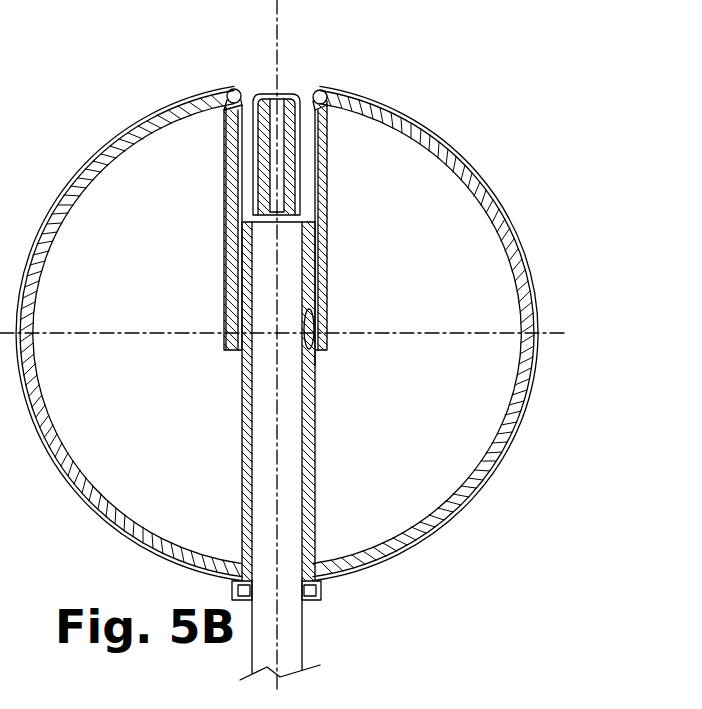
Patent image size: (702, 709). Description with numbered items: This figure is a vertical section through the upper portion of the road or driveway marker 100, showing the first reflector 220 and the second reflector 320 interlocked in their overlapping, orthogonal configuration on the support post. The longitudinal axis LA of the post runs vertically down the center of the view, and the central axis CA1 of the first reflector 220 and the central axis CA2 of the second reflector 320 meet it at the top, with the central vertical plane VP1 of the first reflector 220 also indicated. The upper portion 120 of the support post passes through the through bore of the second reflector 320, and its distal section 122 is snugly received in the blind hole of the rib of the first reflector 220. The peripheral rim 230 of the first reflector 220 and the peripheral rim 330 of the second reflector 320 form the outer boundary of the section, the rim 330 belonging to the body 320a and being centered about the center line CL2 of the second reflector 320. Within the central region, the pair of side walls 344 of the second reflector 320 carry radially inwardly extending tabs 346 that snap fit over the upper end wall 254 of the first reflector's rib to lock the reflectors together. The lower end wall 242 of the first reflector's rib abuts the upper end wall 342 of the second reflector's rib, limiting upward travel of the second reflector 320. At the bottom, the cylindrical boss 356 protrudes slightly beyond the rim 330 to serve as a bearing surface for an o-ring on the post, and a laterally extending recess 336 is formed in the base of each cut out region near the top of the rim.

The road or driveway marker 100 is at (505, 137).
The upper portion of the support post 120 is at (277, 625).
The distal section of the upper portion 122 is at (278, 262).
The first reflector 220 is at (302, 97).
The peripheral rim 230 is at (281, 91).
The end wall 242 is at (315, 367).
The upper end wall 254 is at (229, 214).
The second reflector 320 is at (470, 270).
The body 320a is at (482, 310).
The peripheral rim 330 is at (533, 277).
The laterally extending recess 336 is at (228, 93).
The end wall 342 is at (322, 312).
The side walls 344 is at (240, 147).
The tabs 346 is at (242, 190).
The cylindrical boss 356 is at (320, 592).
The central axis CA1 is at (277, 28).
The central axis CA2 is at (277, 28).
The central vertical plane VP1 is at (277, 63).
The longitudinal axis LA is at (277, 63).
The center line CL2 is at (277, 334).